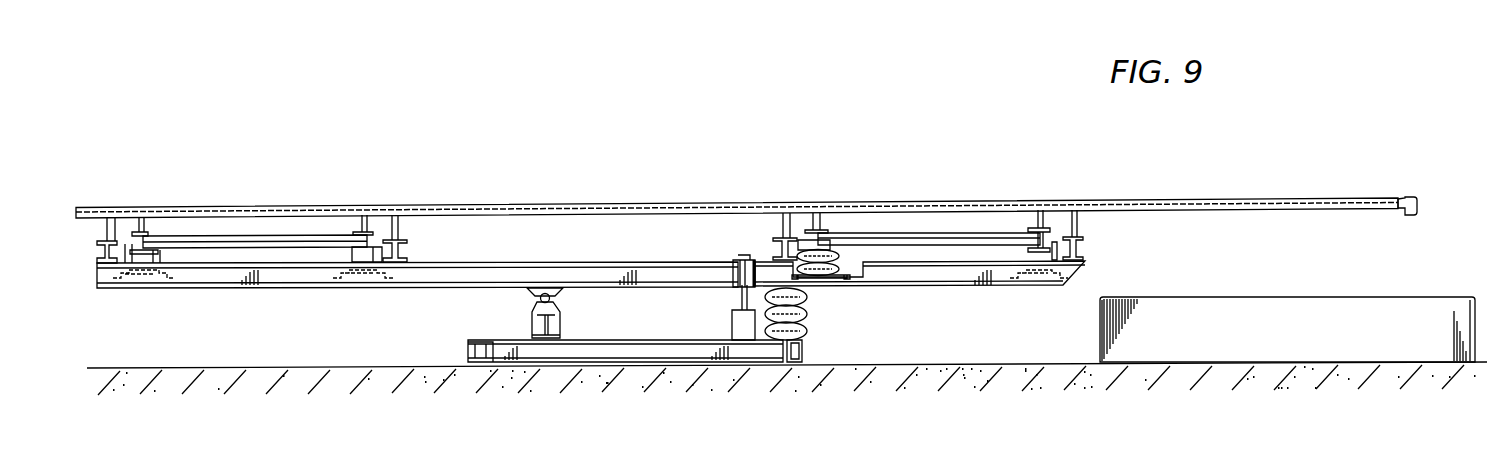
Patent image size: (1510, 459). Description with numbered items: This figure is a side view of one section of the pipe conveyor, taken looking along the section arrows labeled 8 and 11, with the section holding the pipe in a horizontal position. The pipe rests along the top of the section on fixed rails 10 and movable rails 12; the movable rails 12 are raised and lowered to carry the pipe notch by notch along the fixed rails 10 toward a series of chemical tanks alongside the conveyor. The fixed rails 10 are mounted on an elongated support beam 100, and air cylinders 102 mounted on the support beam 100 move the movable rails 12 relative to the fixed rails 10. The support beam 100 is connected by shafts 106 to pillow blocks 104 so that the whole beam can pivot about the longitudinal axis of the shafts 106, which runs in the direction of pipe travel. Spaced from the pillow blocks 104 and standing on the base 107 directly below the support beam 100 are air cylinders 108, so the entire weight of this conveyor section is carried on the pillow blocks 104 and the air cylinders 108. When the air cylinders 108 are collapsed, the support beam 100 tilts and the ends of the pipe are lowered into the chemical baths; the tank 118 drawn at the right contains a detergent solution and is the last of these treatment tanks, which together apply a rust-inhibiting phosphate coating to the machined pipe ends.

The section line 8- 8 is at (73, 47).
The section line 11- 11 is at (92, 137).
The fixed rails 10 is at (400, 232).
The movable rails 12 is at (362, 222).
The support beam 100 is at (568, 262).
The air cylinders 102 is at (848, 264).
The pillow blocks 104 is at (561, 322).
The shafts 106 is at (534, 293).
The lower base frame 107 is at (700, 338).
The air cylinders 108 is at (808, 316).
The tank 118 is at (1352, 297).